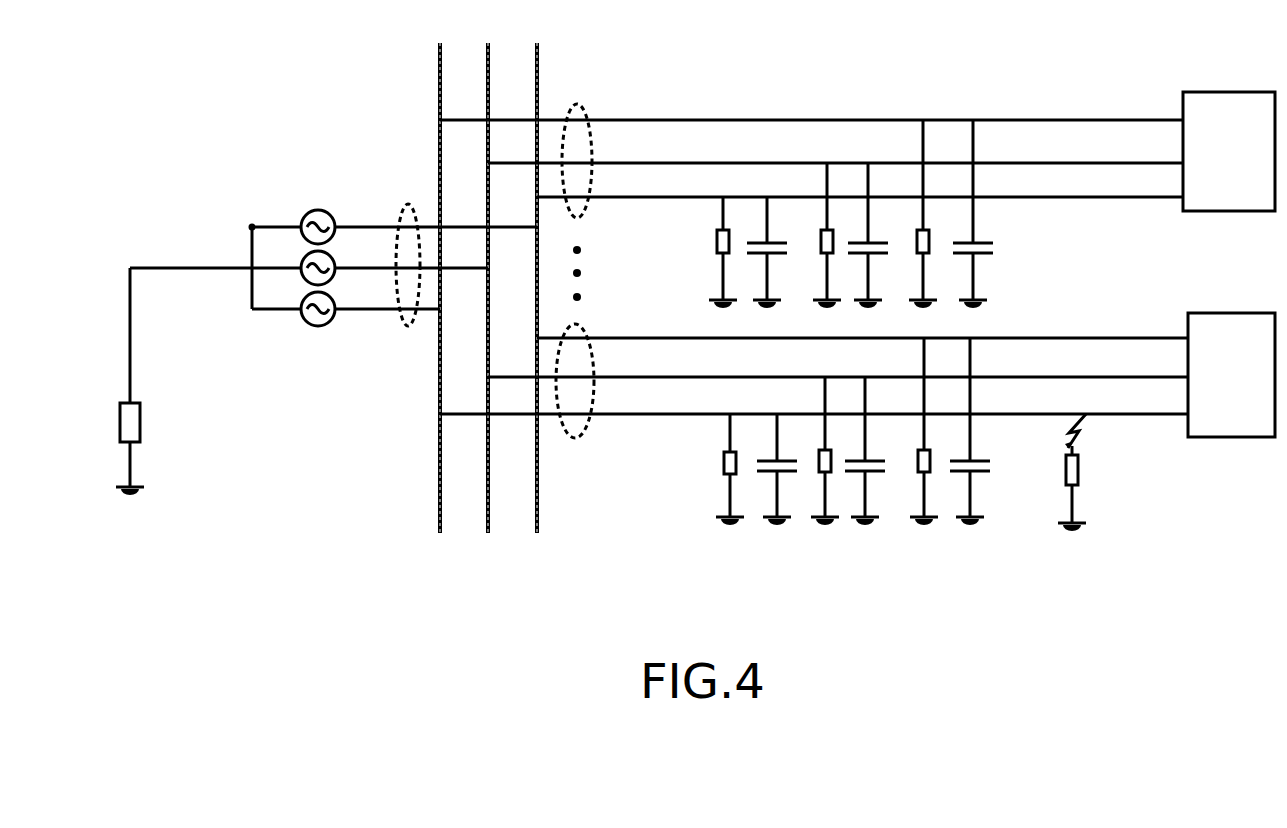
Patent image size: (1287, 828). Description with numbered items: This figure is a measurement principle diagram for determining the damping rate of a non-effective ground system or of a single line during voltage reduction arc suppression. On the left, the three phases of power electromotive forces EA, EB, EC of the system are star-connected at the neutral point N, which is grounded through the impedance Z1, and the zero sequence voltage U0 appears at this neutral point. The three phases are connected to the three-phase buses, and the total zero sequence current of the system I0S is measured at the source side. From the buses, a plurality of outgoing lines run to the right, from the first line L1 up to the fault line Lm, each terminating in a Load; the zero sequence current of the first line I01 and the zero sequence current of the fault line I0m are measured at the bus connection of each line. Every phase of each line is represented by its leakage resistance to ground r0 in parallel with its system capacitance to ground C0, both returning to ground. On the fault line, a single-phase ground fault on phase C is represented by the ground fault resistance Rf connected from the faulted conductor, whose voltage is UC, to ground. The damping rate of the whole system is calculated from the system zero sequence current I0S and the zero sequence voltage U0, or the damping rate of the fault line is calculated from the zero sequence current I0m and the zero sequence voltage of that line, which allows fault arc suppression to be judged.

The zero sequence voltage U0 is at (246, 212).
The neutral point N is at (309, 268).
The phase A power electromotive force EA is at (394, 215).
The phase B power electromotive force EB is at (336, 257).
The phase C power electromotive force EC is at (346, 298).
The zero sequence current of the system I0S is at (408, 287).
The impedance Z1 is at (145, 381).
The line 1 L1 is at (811, 159).
The zero sequence current of line 1 I01 is at (588, 172).
The fault line m Lm is at (838, 381).
The zero sequence current of the fault line m I0m is at (587, 392).
The phase C voltage UC is at (814, 398).
The leakage resistance to ground r0 is at (815, 322).
The system capacitance to ground C0 is at (864, 322).
The ground fault resistance Rf is at (1087, 472).
The load Load is at (1229, 264).